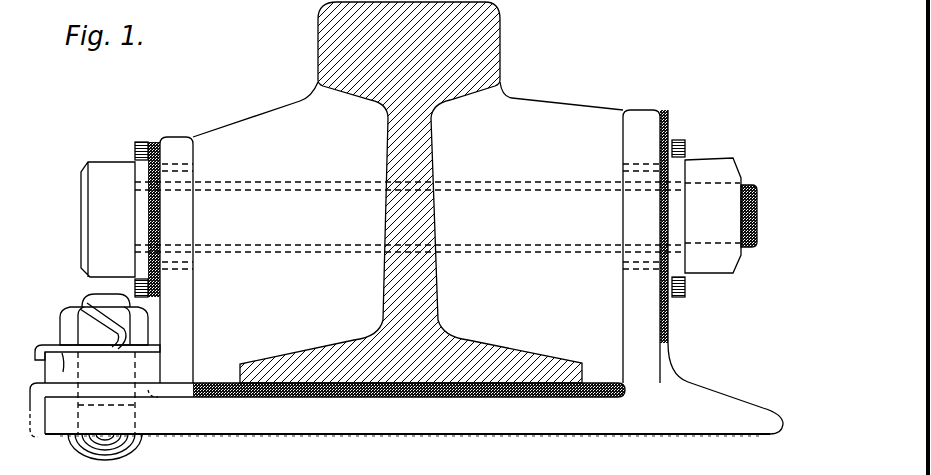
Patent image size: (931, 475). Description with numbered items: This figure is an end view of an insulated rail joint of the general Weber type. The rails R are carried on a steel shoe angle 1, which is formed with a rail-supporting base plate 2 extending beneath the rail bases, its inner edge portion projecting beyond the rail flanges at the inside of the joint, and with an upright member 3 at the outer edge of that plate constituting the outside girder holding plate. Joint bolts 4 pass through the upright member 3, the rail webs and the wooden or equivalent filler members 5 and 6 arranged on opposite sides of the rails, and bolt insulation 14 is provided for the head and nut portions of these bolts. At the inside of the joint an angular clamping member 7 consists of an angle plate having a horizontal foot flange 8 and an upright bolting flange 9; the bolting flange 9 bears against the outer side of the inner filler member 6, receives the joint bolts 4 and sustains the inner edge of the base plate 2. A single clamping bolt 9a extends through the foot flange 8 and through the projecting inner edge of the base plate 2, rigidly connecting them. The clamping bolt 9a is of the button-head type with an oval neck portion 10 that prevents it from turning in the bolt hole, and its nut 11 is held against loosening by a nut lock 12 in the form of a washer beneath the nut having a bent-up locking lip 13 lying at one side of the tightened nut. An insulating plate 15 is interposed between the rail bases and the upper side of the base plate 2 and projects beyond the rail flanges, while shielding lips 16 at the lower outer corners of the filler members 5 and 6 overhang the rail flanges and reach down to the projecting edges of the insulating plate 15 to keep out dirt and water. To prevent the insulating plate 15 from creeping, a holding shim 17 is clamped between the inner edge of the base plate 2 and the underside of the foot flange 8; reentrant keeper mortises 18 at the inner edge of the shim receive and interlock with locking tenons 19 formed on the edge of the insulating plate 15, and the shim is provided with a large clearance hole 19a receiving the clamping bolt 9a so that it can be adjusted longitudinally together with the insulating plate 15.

The rails R is at (493, 52).
The steel shoe angle 1 is at (697, 397).
The rail-supporting base plate 2 is at (407, 418).
The upright member 3 is at (657, 109).
The joint bolts 4 is at (757, 206).
The filler member 5 is at (573, 108).
The inner filler member 6 is at (283, 110).
The angular clamping member 7 is at (176, 361).
The horizontal foot flange 8 is at (55, 370).
The upright bolting flange 9 is at (173, 137).
The clamping bolt 9a is at (83, 293).
The oval neck portion 10 is at (117, 454).
The nut 11 is at (117, 293).
The nut lock 12 is at (55, 344).
The locking lip 13 is at (83, 305).
The bolt insulation 14 is at (667, 139).
The insulating plate 15 is at (407, 397).
The shielding lips 16 is at (413, 369).
The holding shim 17 is at (63, 393).
The keeper mortises 18 is at (156, 398).
The locking tenons 19 is at (170, 392).
The clearance hole 19a is at (134, 368).